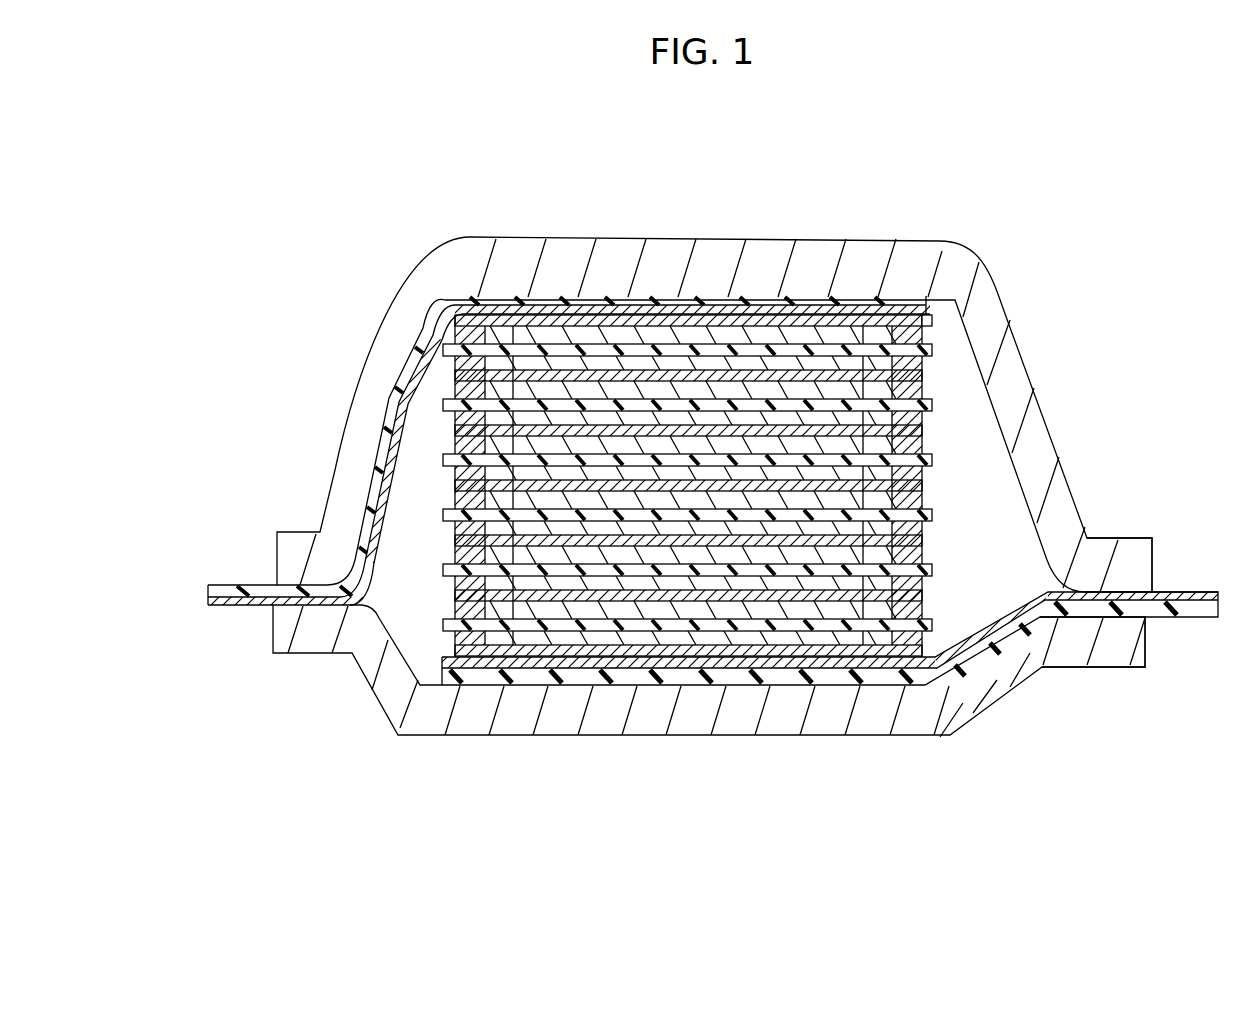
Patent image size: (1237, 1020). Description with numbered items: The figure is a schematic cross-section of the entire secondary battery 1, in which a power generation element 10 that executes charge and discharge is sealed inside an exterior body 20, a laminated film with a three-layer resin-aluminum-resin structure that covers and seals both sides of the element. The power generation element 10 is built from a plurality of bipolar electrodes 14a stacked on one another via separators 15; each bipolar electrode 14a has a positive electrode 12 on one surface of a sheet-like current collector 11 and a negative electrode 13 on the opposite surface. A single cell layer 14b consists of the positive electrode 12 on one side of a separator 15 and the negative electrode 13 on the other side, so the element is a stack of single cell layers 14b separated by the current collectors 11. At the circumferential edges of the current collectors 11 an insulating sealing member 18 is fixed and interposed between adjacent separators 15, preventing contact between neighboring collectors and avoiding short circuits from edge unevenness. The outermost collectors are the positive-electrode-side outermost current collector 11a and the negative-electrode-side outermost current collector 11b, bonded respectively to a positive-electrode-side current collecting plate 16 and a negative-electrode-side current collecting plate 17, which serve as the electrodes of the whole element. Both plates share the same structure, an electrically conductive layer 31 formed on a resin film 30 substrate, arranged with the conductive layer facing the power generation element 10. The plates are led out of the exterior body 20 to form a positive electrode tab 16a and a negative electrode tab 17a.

The secondary battery 1 is at (278, 204).
The power generation element 10 is at (946, 549).
The current collector 11 is at (780, 378).
The positive-electrode-side outermost current collector 11a is at (881, 300).
The negative-electrode-side outermost current collector 11b is at (693, 655).
The positive electrode 12 is at (643, 390).
The negative electrode 13 is at (560, 423).
The bipolar electrode 14a is at (715, 182).
The single cell layer 14b is at (533, 182).
The separator 15 is at (597, 403).
The positive-electrode-side current collecting plate 16 is at (408, 182).
The positive electrode tab 16a is at (234, 596).
The negative-electrode-side current collecting plate 17 is at (848, 806).
The negative electrode tab 17a is at (1185, 608).
The sealing member 18 is at (913, 368).
The exterior body 20 is at (1110, 590).
The resin film 30 is at (453, 300).
The electrically conductive layer 31 is at (487, 312).